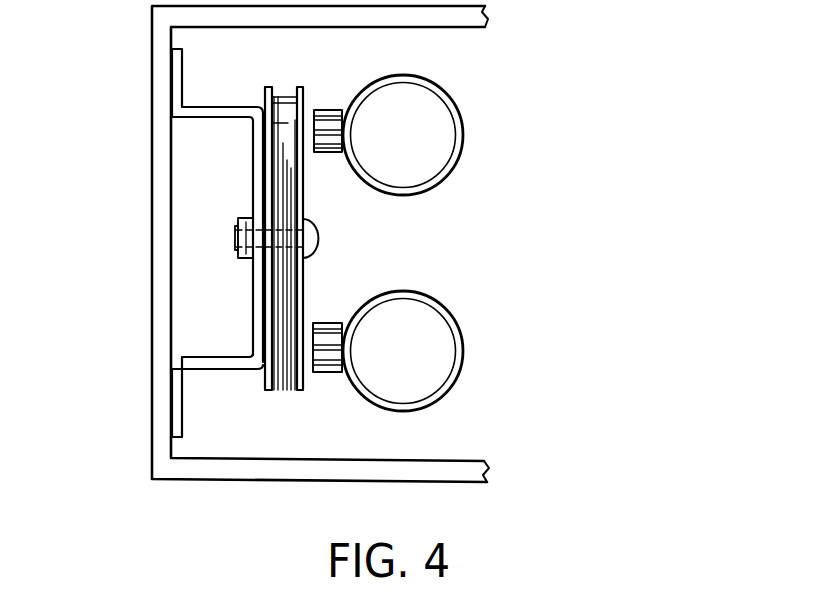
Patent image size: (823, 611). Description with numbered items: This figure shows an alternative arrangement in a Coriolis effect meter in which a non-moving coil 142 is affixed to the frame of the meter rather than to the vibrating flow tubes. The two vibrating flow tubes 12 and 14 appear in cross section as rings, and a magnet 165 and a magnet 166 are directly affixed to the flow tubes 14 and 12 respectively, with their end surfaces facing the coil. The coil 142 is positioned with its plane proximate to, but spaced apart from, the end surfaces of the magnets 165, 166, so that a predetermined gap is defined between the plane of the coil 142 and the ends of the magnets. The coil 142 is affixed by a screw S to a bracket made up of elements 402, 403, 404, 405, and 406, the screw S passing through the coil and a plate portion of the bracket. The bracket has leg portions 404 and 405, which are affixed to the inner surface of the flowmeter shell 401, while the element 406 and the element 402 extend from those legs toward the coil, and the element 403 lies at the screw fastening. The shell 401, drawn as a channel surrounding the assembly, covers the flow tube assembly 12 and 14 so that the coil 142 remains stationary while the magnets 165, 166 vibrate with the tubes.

The flowmeter shell 401 is at (151, 97).
The bracket element 402 is at (211, 357).
The bracket element 403 is at (253, 278).
The leg portion of bracket 404 is at (186, 73).
The leg portion of bracket 405 is at (183, 410).
The bracket element 406 is at (213, 118).
The coil 142 is at (280, 386).
The magnet 165 is at (325, 374).
The magnet 166 is at (335, 110).
The flow tube 12 is at (450, 140).
The flow tube 14 is at (457, 372).
The screw S is at (317, 226).